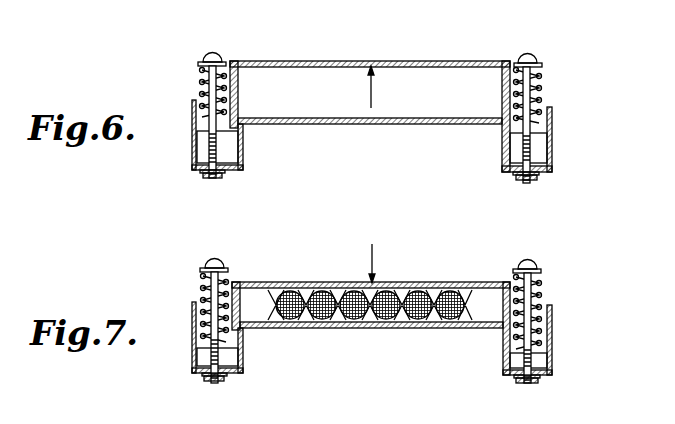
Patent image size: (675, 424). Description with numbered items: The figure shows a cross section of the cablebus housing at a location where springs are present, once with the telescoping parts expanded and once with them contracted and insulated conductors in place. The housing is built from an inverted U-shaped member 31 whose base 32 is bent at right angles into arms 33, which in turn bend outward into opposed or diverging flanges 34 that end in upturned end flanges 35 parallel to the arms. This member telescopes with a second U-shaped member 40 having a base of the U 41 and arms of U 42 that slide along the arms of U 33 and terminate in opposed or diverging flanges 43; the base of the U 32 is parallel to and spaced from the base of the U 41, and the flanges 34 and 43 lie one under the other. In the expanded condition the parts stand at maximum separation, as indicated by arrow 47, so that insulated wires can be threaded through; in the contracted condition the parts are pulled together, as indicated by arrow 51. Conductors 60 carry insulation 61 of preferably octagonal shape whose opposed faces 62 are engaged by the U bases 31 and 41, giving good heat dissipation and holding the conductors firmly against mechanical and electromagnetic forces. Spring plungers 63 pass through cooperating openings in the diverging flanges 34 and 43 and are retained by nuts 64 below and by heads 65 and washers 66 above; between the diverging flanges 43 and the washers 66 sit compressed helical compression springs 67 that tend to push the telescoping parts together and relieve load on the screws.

In FIG. 6, the inverted U-shaped member 31 is at (363, 125).
In FIG. 7, the inverted U-shaped member 31 is at (372, 330).
In FIG. 6, the base 32 is at (300, 126).
In FIG. 7, the base 32 is at (322, 330).
In FIG. 6, the arms 33 is at (243, 146).
In FIG. 7, the arms 33 is at (243, 350).
In FIG. 6, the diverging flanges 34 is at (224, 179).
In FIG. 7, the diverging flanges 34 is at (226, 382).
In FIG. 6, the end flanges 35 is at (205, 136).
In FIG. 7, the end flanges 35 is at (212, 337).
In FIG. 6, the U-shaped member 40 is at (370, 103).
In FIG. 7, the U-shaped member 40 is at (371, 307).
In FIG. 6, the base of the U 41 is at (404, 61).
In FIG. 7, the base of the U 41 is at (474, 282).
In FIG. 6, the arms of U 42 is at (502, 92).
In FIG. 7, the arms of U 42 is at (503, 300).
In FIG. 6, the diverging flanges 43 is at (198, 138).
In FIG. 7, the diverging flanges 43 is at (196, 356).
In FIG. 6, the arrow 47 is at (369, 94).
In FIG. 7, the arrow 51 is at (374, 253).
In FIG. 7, the conductors 60 is at (369, 307).
In FIG. 7, the insulation 61 is at (414, 288).
In FIG. 7, the opposed faces 62 is at (446, 326).
In FIG. 6, the spring plungers 63 is at (210, 90).
In FIG. 7, the spring plungers 63 is at (535, 296).
In FIG. 6, the nuts 64 is at (204, 175).
In FIG. 7, the nuts 64 is at (206, 378).
In FIG. 6, the heads 65 is at (345, 102).
In FIG. 7, the heads 65 is at (342, 306).
In FIG. 6, the washers 66 is at (198, 64).
In FIG. 7, the washers 66 is at (214, 259).
In FIG. 6, the helical compression springs 67 is at (540, 78).
In FIG. 7, the helical compression springs 67 is at (552, 326).